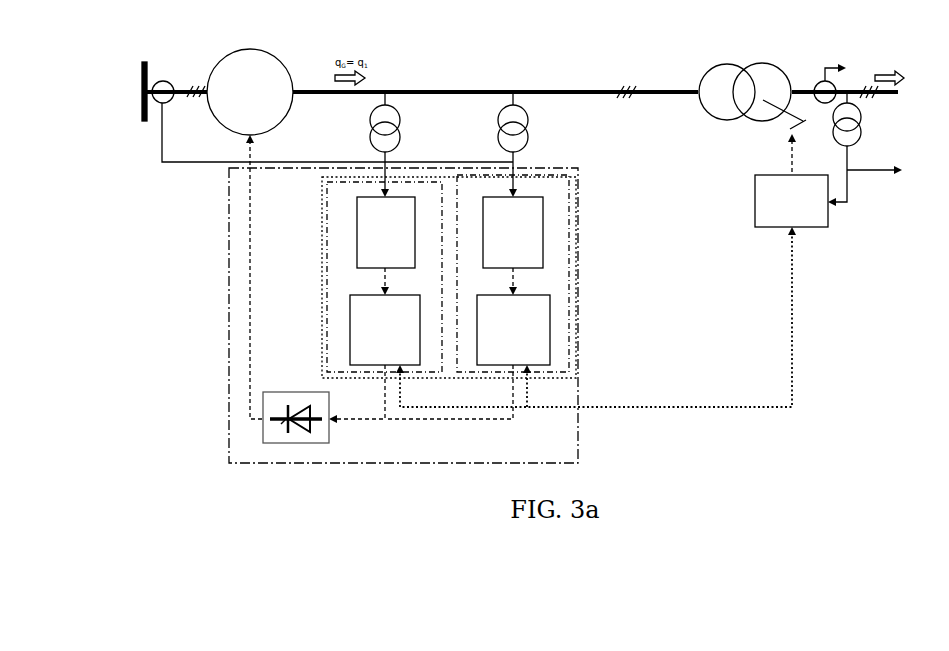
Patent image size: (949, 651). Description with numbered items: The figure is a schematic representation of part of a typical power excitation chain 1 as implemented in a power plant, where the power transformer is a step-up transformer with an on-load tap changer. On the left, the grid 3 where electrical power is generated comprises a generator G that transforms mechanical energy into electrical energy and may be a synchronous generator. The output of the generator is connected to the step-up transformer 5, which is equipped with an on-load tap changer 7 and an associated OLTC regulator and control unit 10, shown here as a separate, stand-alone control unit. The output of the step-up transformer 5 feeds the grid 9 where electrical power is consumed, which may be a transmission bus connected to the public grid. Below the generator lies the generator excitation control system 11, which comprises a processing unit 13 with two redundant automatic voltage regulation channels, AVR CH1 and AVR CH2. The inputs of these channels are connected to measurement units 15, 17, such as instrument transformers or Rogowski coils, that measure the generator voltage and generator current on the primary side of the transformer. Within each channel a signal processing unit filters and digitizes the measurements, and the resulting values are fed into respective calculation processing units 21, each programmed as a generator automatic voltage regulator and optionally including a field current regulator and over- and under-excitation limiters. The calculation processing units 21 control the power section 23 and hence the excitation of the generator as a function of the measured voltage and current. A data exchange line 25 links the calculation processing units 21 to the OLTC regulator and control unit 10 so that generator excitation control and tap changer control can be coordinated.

The power excitation chain 1 is at (552, 58).
The grid 3 is at (268, 46).
The step-up transformer 5 is at (737, 63).
The on-load tap changer 7 is at (788, 102).
The grid 9 is at (893, 98).
The OLTC regulator and control unit 10 is at (767, 202).
The generator excitation control system 11 is at (578, 438).
The processing unit 13 is at (568, 373).
The measurement unit 15 is at (498, 121).
The measurement unit 17 is at (158, 112).
The calculation processing unit 21 is at (353, 320).
The power section 23 is at (292, 442).
The data exchange line 25 is at (790, 307).